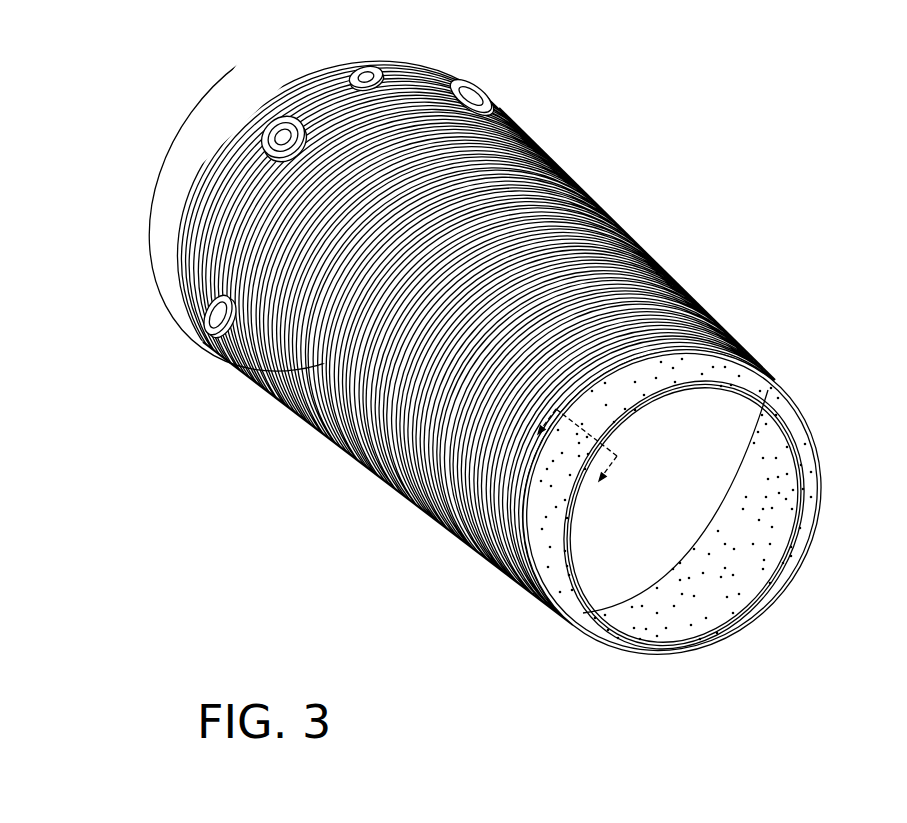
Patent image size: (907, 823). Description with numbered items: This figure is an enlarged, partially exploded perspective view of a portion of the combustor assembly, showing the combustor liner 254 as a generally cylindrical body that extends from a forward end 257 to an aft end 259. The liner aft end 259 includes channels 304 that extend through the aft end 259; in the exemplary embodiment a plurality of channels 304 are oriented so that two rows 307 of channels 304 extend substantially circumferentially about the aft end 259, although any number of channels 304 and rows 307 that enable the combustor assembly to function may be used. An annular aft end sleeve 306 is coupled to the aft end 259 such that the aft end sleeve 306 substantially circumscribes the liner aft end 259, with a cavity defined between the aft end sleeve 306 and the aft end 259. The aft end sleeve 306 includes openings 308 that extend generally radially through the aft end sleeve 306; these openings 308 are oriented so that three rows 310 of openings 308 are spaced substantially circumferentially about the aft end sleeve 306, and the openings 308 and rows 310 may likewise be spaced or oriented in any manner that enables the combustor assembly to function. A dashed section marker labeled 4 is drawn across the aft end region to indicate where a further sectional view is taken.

The combustor liner 254 is at (678, 174).
The forward end 257 is at (168, 354).
The aft end 259 is at (800, 373).
The channel 304 is at (722, 614).
The aft end sleeve 306 is at (556, 588).
The rows of channels 307 is at (738, 553).
The opening 308 is at (716, 332).
The rows of openings 310 is at (594, 402).
The section line 4 is at (577, 463).